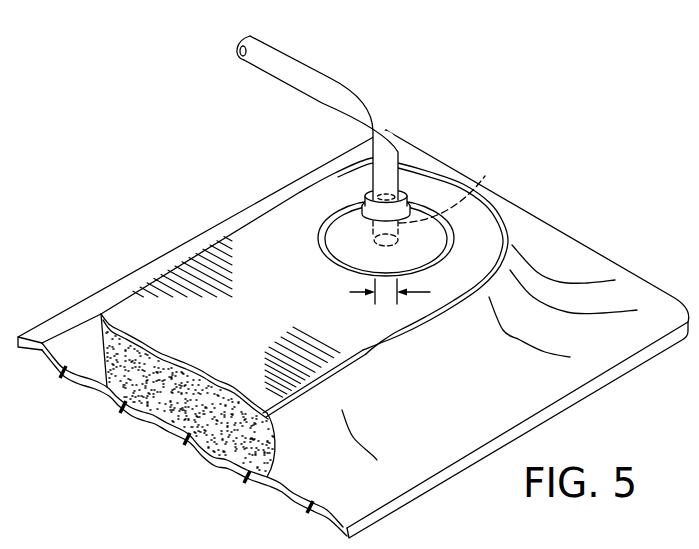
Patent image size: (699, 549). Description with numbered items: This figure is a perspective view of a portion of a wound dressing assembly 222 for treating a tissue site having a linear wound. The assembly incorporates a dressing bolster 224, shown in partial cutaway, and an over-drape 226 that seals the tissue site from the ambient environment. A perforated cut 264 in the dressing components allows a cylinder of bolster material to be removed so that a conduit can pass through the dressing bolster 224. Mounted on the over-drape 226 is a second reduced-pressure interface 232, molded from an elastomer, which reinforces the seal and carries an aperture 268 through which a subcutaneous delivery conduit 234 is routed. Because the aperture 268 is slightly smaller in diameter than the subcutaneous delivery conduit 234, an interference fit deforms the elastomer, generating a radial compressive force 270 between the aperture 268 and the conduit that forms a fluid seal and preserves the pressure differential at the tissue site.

The wound dressing assembly 222 is at (353, 277).
The dressing bolster 224 is at (143, 416).
The over-drape 226 is at (573, 243).
The second reduced-pressure interface 232 is at (409, 225).
The subcutaneous delivery conduit 234 is at (312, 70).
The perforated cut 264 is at (485, 176).
The aperture 268 is at (368, 193).
The radial compressive force 270 is at (350, 292).